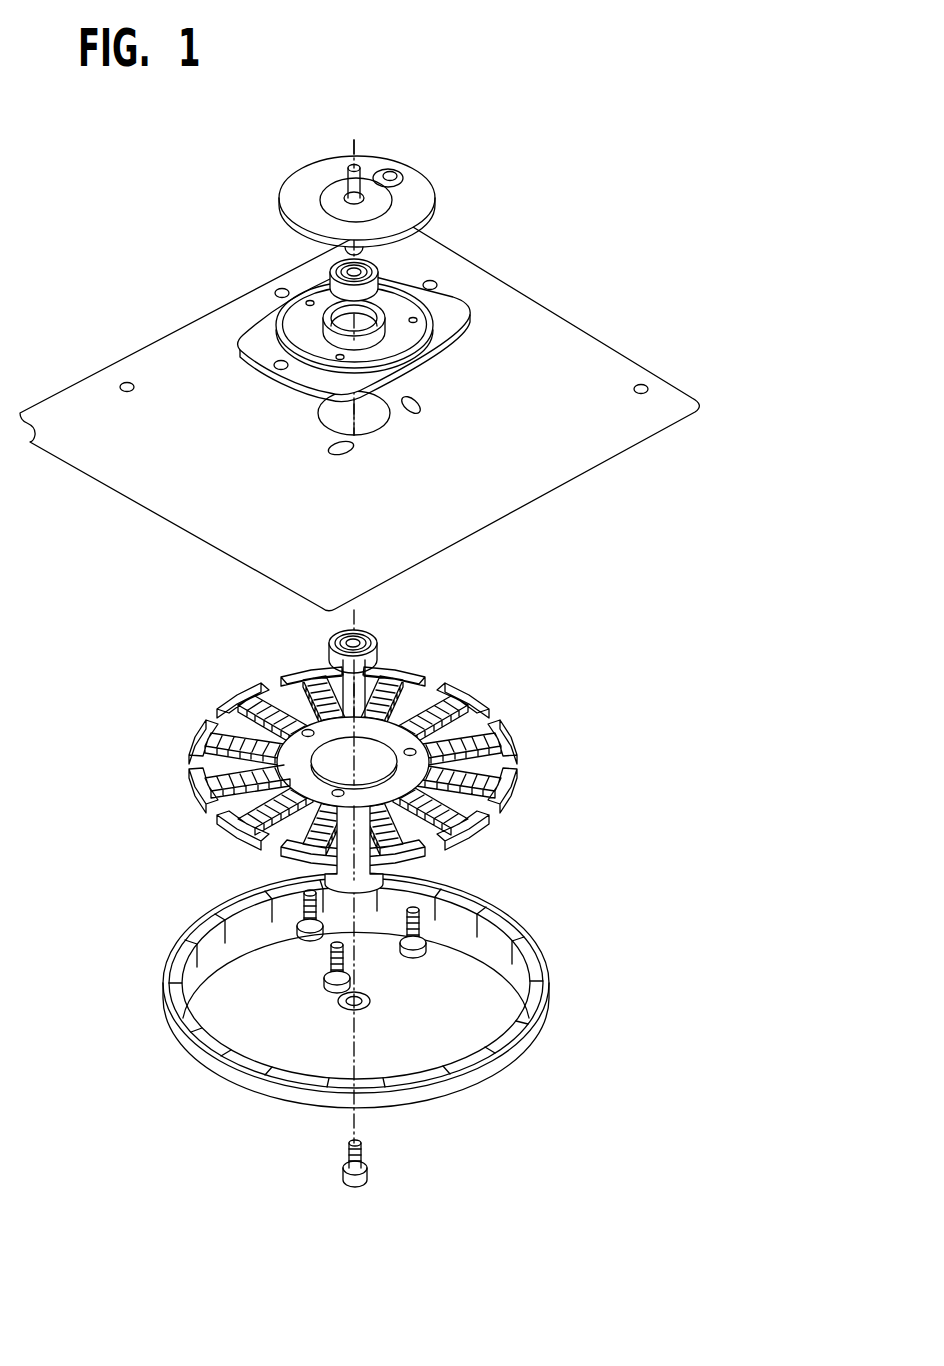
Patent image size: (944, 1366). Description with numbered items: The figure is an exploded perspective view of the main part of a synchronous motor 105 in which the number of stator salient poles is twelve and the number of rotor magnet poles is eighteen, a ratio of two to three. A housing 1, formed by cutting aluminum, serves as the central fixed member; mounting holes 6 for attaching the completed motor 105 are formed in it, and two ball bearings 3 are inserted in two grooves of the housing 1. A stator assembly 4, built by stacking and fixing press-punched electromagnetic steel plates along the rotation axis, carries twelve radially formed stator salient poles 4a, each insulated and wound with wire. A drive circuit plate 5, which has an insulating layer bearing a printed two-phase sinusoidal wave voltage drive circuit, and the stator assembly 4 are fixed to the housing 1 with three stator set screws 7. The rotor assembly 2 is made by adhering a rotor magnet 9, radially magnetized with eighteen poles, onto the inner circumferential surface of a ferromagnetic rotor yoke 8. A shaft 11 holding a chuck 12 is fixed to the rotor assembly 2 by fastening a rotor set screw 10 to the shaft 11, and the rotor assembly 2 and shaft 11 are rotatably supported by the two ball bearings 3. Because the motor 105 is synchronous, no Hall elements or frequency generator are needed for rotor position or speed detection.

The housing 1 is at (255, 333).
The rotor assembly 2 is at (515, 1066).
The ball bearing 3 is at (382, 276).
The stator assembly 4 is at (190, 719).
The stator salient pole 4a is at (194, 803).
The drive circuit plate 5 is at (170, 350).
The mounting hole 6 is at (435, 287).
The stator set screw 7 is at (428, 937).
The rotor yoke 8 is at (537, 1020).
The rotor magnet 9 is at (526, 950).
The rotor set screw 10 is at (373, 1160).
The shaft 11 is at (354, 168).
The chuck 12 is at (410, 197).
The motor 105 is at (617, 665).